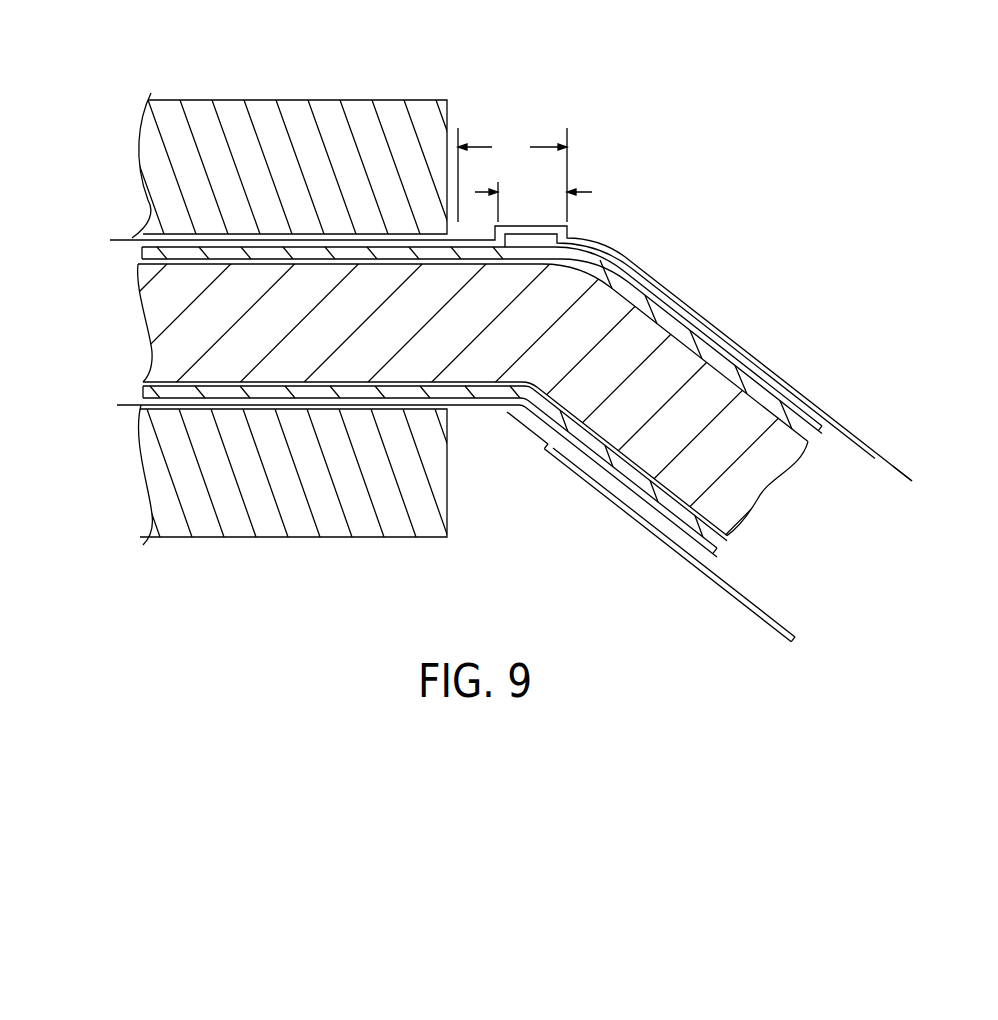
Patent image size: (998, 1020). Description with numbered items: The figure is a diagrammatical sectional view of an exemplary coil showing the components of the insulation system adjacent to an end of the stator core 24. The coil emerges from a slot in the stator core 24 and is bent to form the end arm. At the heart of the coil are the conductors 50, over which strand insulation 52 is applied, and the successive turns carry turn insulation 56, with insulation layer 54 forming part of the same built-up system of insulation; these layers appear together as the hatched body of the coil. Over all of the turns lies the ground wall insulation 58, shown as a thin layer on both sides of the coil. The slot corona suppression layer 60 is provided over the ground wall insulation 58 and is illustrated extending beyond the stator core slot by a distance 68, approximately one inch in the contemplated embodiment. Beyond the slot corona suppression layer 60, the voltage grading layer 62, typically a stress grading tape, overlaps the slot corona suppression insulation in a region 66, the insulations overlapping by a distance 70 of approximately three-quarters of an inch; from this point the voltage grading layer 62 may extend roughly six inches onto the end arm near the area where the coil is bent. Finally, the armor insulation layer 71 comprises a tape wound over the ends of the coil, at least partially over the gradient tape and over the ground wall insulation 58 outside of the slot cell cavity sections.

The stator core 24 is at (306, 125).
The conductors 50 is at (499, 380).
The strand insulation 52 is at (499, 380).
The insulation layer 54 is at (499, 380).
The turn insulation 56 is at (762, 485).
The ground wall insulation 58 is at (142, 254).
The slot corona suppression layer 60 is at (128, 239).
The voltage grading layer 62 is at (737, 578).
The overlap region 66 is at (520, 432).
The distance 68 is at (512, 175).
The overlap distance 70 is at (533, 201).
The armor insulation layer 71 is at (893, 468).